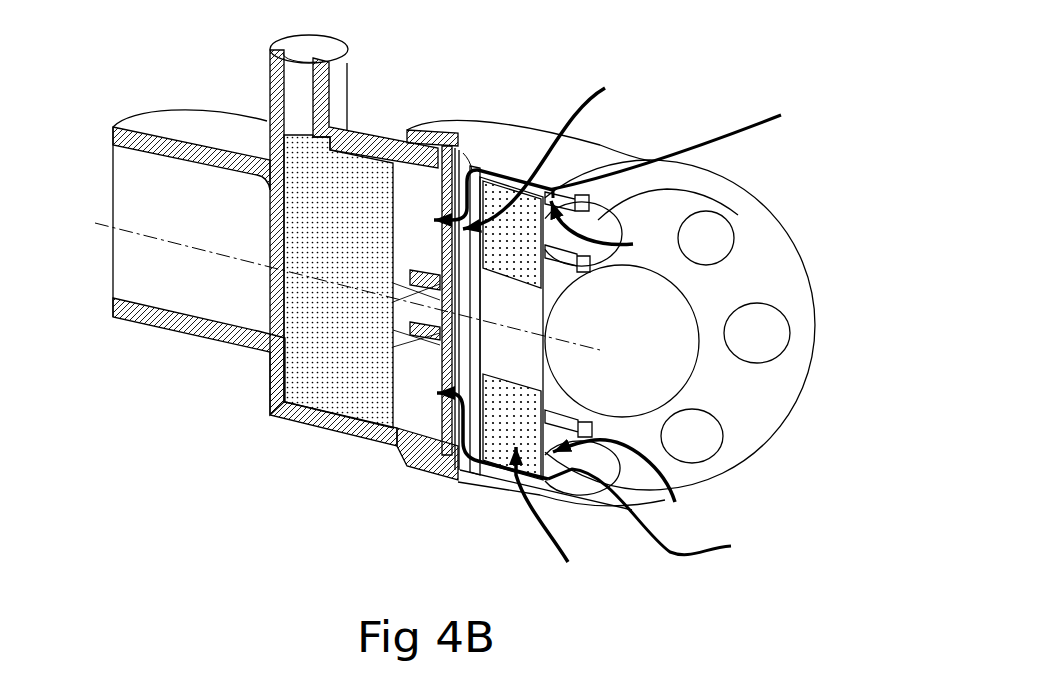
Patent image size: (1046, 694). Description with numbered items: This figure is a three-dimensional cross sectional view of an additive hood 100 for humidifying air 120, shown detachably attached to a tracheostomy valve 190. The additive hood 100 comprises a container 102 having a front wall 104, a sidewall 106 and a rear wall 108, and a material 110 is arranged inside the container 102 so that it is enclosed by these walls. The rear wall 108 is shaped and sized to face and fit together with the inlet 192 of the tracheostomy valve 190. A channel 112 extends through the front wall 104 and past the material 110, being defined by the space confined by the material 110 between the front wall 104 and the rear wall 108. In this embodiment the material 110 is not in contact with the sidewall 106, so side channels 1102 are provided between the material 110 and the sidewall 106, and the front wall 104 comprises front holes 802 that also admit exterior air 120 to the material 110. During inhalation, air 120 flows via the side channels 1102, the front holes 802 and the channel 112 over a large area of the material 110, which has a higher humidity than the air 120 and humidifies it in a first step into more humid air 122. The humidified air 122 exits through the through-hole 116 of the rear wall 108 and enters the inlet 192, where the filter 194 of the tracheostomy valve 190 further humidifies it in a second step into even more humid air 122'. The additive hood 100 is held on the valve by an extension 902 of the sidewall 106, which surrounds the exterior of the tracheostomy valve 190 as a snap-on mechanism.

The additive hood 100 is at (710, 93).
The container 102 is at (441, 480).
The front wall 104 is at (585, 517).
The sidewall 106 is at (573, 162).
The rear wall 108 is at (475, 152).
The material 110 is at (549, 519).
The channel 112 is at (602, 341).
The through-hole 116 is at (466, 345).
The air 120 is at (640, 195).
The more humid air 122 is at (362, 281).
The even more humid air 122' is at (233, 240).
The tracheostomy valve 190 is at (271, 418).
The inlet 192 is at (606, 89).
The filter 194 is at (352, 447).
The front hole 802 is at (740, 178).
The extension 902 is at (448, 143).
The side channel 1102 is at (646, 328).